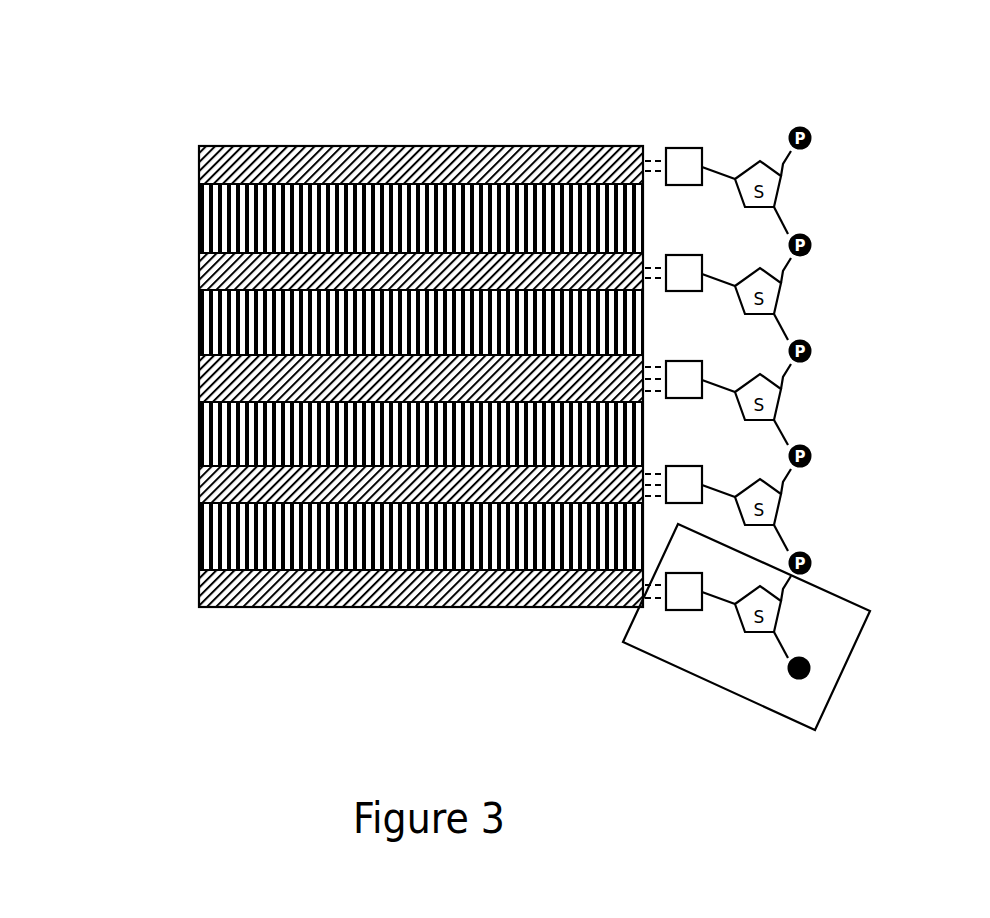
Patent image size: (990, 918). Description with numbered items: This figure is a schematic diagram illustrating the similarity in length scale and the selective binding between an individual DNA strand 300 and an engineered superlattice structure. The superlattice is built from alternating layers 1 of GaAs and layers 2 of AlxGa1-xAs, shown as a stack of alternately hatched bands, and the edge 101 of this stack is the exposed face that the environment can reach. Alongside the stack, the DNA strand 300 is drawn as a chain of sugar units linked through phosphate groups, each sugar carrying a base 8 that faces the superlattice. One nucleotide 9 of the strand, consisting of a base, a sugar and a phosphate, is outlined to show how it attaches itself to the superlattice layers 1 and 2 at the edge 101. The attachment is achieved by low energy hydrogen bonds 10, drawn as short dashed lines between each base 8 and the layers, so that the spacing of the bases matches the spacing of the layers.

The edge of the superlattice 101 is at (167, 115).
The layer of GaAs 1 is at (190, 157).
The layer of AlxGa1-xAs 2 is at (190, 211).
The hydrogen bonds 10 is at (646, 140).
The base 8 is at (676, 140).
The DNA strand 300 is at (845, 332).
The nucleotide 9 is at (847, 640).